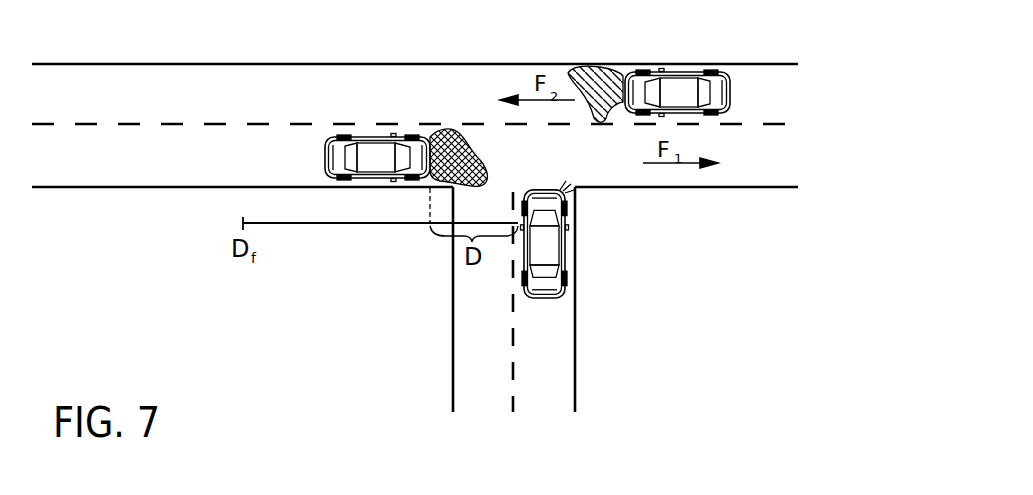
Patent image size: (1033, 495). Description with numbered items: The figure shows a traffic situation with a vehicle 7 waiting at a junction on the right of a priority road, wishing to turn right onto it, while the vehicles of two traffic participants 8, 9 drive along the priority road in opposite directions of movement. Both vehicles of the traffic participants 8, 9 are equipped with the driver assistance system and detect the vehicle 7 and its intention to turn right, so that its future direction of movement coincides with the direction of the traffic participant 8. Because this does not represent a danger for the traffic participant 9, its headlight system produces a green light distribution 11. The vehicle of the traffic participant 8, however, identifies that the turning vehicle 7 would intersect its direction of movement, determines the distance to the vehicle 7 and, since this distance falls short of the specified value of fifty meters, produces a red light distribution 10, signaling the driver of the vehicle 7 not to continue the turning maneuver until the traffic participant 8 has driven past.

The vehicle 7 is at (537, 274).
The traffic participant 8 is at (367, 171).
The traffic participant 9 is at (674, 106).
The light distribution 10 is at (438, 182).
The light distribution 11 is at (612, 75).